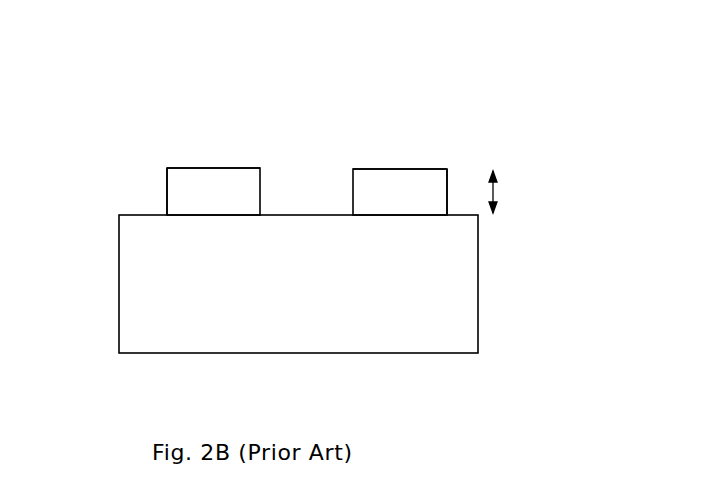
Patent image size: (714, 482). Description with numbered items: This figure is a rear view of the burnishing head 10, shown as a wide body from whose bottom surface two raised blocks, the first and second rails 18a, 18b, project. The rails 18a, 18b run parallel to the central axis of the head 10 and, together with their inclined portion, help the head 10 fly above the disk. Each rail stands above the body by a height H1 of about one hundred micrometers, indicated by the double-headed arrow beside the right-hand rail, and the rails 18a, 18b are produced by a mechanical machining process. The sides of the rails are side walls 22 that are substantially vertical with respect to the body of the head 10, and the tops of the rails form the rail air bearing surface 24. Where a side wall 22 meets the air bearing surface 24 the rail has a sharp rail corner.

The head 10 is at (512, 245).
The first rail 18a is at (181, 153).
The second rail 18b is at (338, 165).
The side walls 22 is at (165, 198).
The rail air bearing surface 24 is at (228, 168).
The height H1 is at (500, 182).